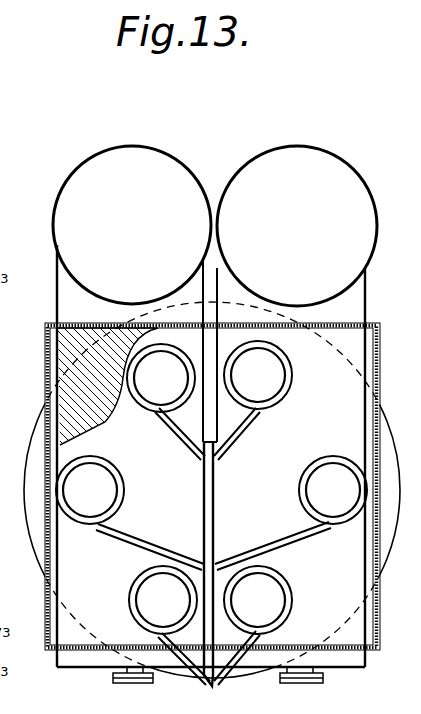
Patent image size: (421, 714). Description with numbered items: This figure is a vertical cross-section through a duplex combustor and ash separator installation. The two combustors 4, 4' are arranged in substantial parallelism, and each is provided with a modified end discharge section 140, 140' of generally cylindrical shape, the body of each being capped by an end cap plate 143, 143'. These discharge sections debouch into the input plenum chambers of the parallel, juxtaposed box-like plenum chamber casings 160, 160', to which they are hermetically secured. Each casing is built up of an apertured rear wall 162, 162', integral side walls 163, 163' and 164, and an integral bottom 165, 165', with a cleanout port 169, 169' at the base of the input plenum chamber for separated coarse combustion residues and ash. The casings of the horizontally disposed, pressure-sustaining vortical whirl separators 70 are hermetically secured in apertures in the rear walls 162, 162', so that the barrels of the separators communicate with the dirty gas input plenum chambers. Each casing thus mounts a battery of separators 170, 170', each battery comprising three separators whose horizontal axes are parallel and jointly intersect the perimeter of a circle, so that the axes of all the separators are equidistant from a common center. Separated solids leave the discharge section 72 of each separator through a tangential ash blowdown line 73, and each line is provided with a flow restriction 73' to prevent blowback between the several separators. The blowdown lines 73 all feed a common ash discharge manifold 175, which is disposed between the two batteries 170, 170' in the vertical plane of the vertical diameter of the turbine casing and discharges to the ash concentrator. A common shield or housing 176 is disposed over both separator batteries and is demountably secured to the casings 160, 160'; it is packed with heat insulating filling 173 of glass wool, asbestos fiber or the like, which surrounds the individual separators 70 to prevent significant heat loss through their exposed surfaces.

The combustor 4 is at (131, 225).
The combustor 4' is at (297, 217).
The discharge section 140 is at (140, 140).
The discharge section 140' is at (355, 176).
The end cap plate 143 is at (147, 183).
The end cap plate 143' is at (306, 183).
The ash separator casing 160 is at (33, 456).
The ash separator casing 160' is at (380, 467).
The rear wall 162 is at (143, 351).
The rear wall 162' is at (223, 488).
The side wall 163 is at (192, 486).
The side wall 163' is at (239, 269).
The side wall 164 is at (200, 287).
The bottom 165 is at (89, 677).
The bottom 165' is at (324, 679).
The cleanout port 169 is at (115, 650).
The cleanout port 169' is at (302, 645).
The battery of vortical whirl separators 170 is at (102, 557).
The battery of vortical whirl separators 170' is at (247, 473).
The heat insulating filling 173 is at (85, 375).
The common ash discharge manifold 175 is at (214, 530).
The common shield or housing 176 is at (0, 572).
The vortical whirl separator 70 is at (211, 487).
The discharge section 72 is at (211, 487).
The ash blowdown line 73 is at (213, 546).
The flow restriction 73' is at (182, 480).